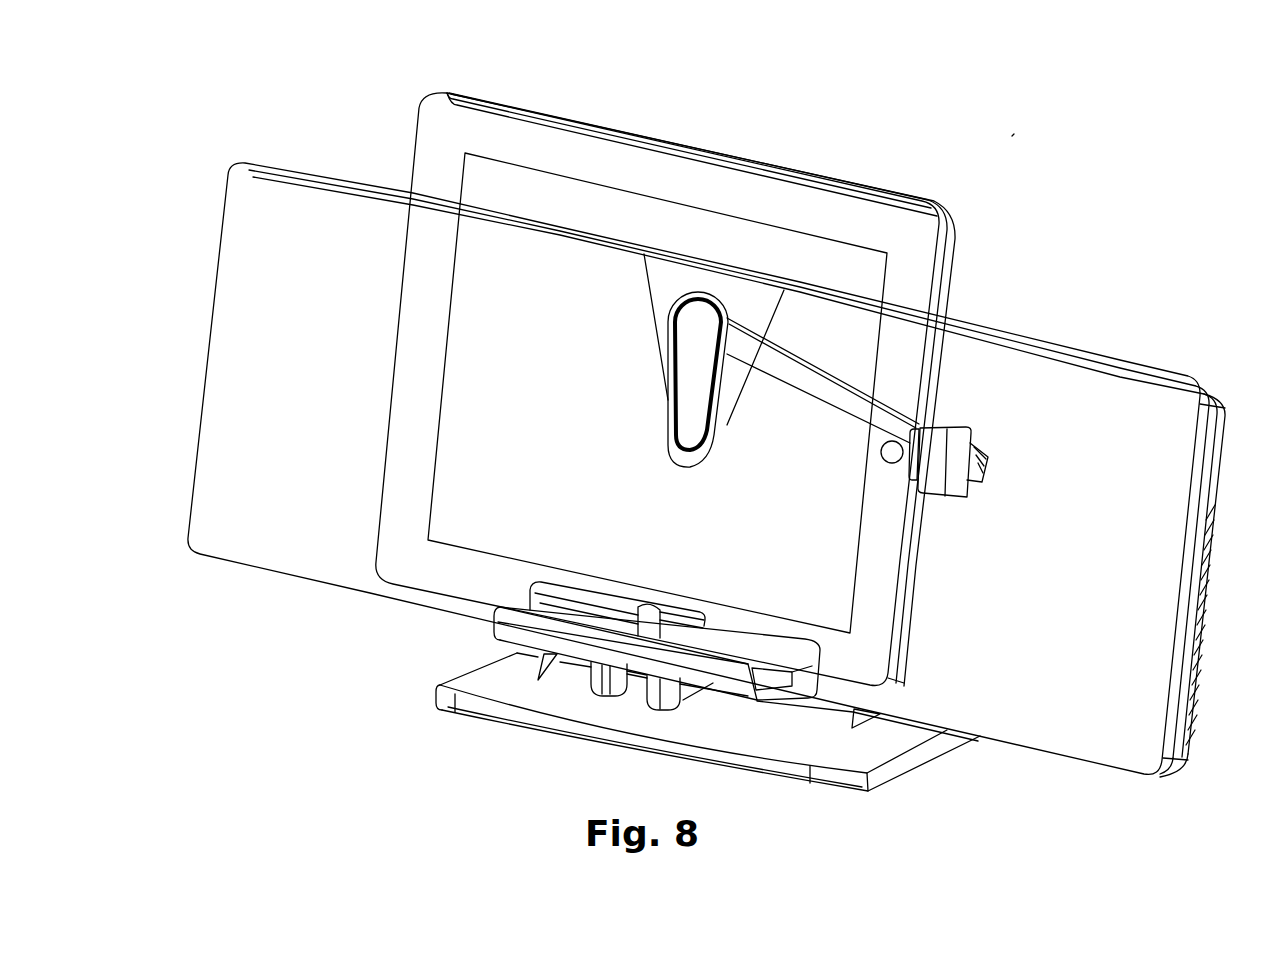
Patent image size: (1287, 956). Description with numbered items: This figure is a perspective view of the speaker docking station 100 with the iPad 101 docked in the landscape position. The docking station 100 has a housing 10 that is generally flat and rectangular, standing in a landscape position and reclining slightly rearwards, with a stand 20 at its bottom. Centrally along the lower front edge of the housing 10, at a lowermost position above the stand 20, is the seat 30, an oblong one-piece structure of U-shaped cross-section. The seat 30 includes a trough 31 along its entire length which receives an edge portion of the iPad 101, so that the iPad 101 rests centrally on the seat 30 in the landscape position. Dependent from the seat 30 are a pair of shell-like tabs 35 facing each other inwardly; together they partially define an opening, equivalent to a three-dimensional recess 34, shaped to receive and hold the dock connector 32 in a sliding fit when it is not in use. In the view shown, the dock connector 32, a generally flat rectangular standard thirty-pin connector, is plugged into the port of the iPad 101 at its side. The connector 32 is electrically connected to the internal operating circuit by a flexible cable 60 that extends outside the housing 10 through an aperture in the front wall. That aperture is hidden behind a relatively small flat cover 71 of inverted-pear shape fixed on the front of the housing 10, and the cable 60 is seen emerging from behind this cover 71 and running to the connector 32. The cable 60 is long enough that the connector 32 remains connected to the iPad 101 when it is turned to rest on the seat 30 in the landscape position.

The speaker docking station 100 is at (1012, 136).
The iPad 101 is at (952, 229).
The housing 10 is at (1102, 354).
The stand 20 is at (470, 672).
The seat 30 is at (557, 652).
The trough 31 is at (713, 643).
The dock connector 32 is at (955, 497).
The recess 34 is at (632, 690).
The tabs 35 is at (600, 695).
The flexible cable 60 is at (827, 392).
The cover 71 is at (688, 369).